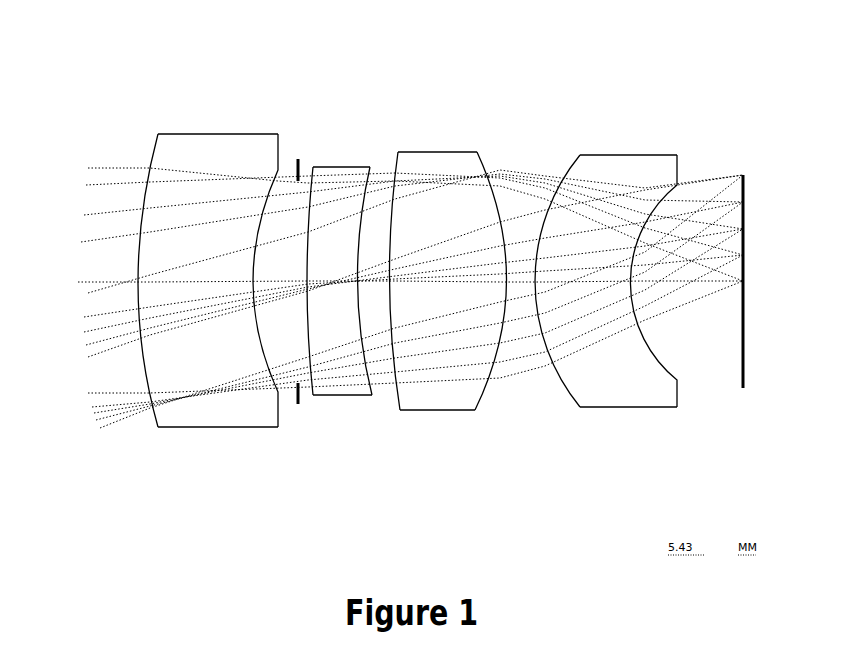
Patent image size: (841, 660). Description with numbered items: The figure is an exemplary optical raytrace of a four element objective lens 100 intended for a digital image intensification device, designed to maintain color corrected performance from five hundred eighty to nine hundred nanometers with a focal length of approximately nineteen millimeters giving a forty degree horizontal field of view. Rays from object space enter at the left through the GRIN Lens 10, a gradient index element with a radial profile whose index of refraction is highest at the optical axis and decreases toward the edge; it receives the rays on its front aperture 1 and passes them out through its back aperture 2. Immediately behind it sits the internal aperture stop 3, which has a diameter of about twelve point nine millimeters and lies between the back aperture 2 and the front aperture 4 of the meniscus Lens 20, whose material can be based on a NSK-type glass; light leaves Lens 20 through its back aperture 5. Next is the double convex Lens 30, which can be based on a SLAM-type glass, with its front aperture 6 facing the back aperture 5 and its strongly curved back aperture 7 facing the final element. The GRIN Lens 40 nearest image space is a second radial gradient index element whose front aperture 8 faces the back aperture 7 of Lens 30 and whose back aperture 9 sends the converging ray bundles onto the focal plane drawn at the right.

The objective lens 100 is at (513, 58).
The GRIN Lens 10 is at (215, 134).
The front aperture 1 is at (137, 270).
The back aperture 2 is at (253, 274).
The internal aperture stop 3 is at (298, 157).
The Lens 20 is at (335, 166).
The front aperture 4 is at (303, 333).
The back aperture 5 is at (358, 317).
The Lens 30 is at (435, 150).
The front aperture 6 is at (387, 243).
The back aperture 7 is at (495, 217).
The GRIN Lens 40 is at (617, 152).
The front aperture 8 is at (573, 392).
The back aperture 9 is at (658, 363).